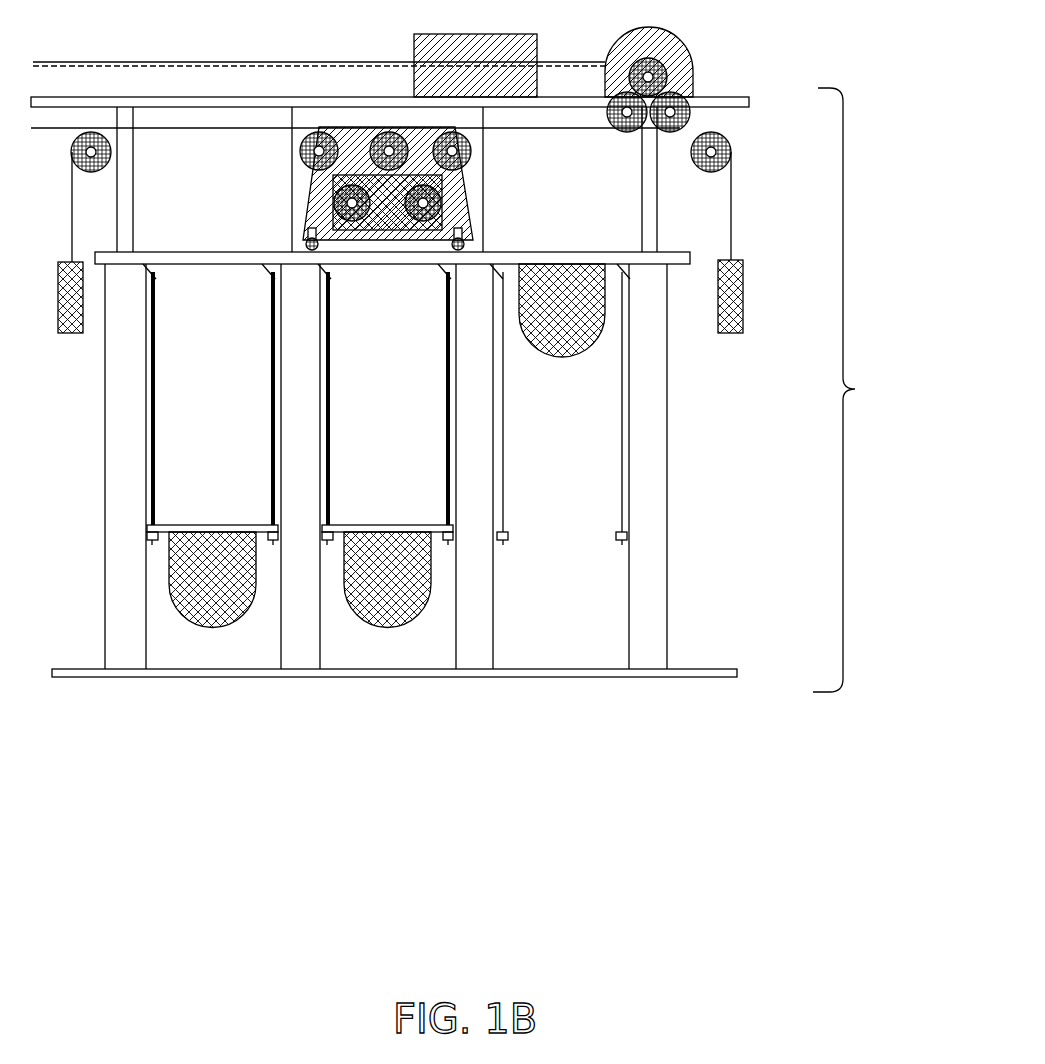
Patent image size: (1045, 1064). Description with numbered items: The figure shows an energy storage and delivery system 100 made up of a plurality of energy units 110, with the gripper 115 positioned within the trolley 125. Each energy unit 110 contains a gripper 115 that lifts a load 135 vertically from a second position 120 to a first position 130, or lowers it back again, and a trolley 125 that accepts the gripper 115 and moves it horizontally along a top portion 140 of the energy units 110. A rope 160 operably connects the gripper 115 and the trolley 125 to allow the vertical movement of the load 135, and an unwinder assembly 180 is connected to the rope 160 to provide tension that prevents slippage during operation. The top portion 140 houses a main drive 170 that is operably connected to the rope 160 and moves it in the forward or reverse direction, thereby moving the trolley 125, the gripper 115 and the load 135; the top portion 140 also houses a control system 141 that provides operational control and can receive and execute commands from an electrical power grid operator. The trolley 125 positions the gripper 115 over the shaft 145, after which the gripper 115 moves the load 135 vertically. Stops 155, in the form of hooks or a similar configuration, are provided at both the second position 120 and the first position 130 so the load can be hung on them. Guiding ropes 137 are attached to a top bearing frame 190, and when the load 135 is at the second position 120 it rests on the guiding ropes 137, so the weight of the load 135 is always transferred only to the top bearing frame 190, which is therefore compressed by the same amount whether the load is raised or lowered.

The energy storage and delivery system 100 is at (872, 70).
The energy unit 110 is at (912, 400).
The gripper 115 is at (384, 222).
The second position 120 is at (153, 524).
The trolley 125 is at (431, 225).
The first position 130 is at (152, 255).
The load 135 is at (560, 347).
The guiding ropes 137 is at (621, 500).
The top portion 140 is at (625, 250).
The control system 141 is at (427, 50).
The shaft 145 is at (403, 493).
The stops 155 is at (272, 275).
The rope 160 is at (731, 243).
The main drive 170 is at (687, 52).
The unwinder assembly 180 is at (735, 305).
The top bearing frame 190 is at (678, 266).